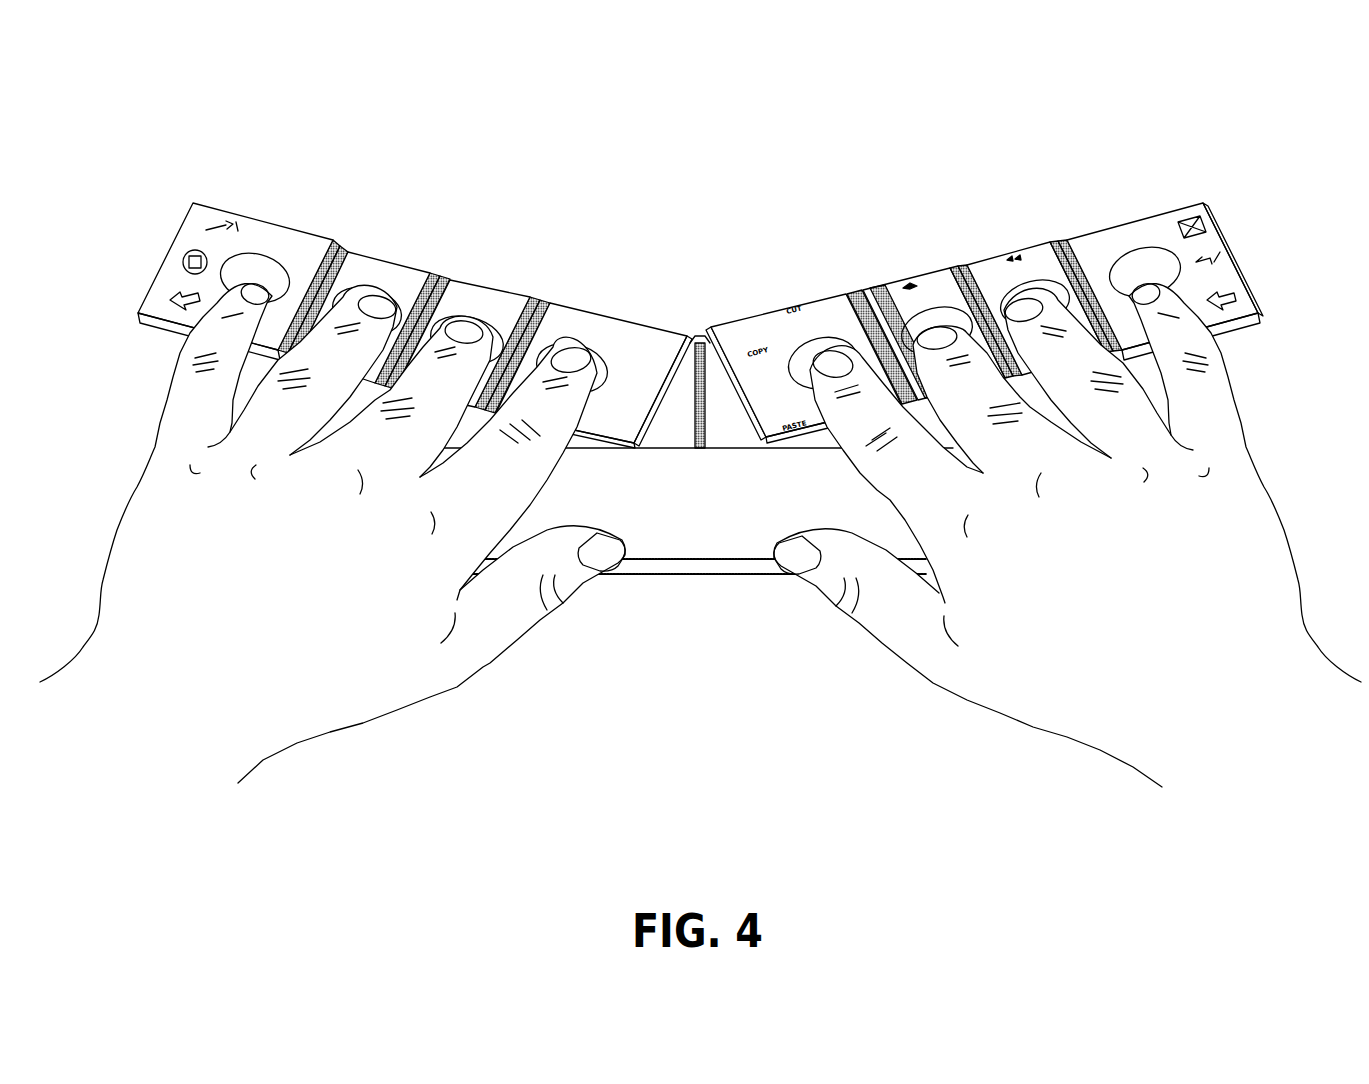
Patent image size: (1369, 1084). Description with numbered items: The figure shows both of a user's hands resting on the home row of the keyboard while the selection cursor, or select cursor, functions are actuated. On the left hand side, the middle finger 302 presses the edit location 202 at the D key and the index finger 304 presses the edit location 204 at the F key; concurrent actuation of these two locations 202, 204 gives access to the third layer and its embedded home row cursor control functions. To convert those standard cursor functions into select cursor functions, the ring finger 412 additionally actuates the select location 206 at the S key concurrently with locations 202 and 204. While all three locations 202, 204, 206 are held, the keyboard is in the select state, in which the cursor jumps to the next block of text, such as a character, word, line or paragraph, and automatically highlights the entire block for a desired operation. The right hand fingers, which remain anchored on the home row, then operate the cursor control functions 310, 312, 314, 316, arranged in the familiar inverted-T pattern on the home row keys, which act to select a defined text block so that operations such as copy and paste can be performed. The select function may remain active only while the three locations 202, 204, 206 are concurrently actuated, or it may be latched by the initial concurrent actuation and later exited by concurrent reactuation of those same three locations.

The edit location 202 is at (493, 327).
The edit location 204 is at (597, 357).
The select function location 206 is at (397, 303).
The middle finger 302 is at (450, 317).
The index finger 304 is at (567, 357).
The cursor control function 310 is at (813, 337).
The cursor control function 312 is at (1043, 282).
The cursor control function 314 is at (945, 310).
The cursor control function 316 is at (905, 277).
The ring finger 412 is at (360, 283).